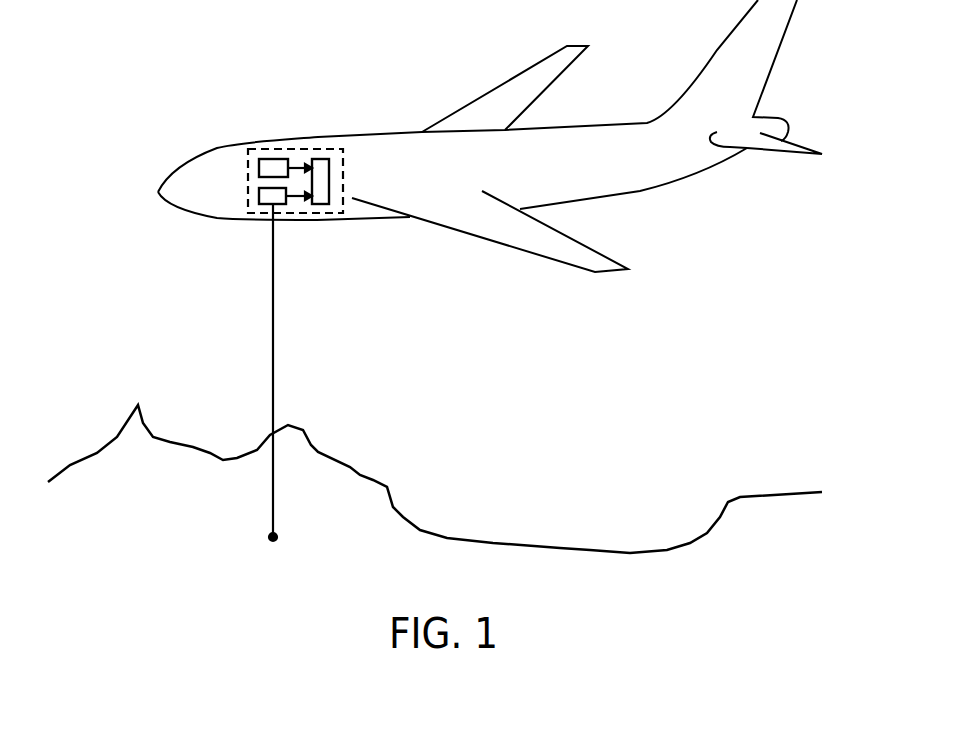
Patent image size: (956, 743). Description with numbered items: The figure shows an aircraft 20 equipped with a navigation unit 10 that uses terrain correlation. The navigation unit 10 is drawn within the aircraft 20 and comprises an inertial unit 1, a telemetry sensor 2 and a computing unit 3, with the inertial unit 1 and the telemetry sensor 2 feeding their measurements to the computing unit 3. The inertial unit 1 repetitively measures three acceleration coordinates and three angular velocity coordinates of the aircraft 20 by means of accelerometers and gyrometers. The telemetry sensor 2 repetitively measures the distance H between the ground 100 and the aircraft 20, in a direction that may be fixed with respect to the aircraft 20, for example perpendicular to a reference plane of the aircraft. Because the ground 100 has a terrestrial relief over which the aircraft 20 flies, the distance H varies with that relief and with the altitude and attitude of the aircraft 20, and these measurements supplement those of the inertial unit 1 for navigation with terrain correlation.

The inertial unit 1 is at (260, 167).
The telemetry sensor 2 is at (259, 197).
The computing unit 3 is at (322, 204).
The navigation unit 10 is at (279, 150).
The aircraft 20 is at (318, 137).
The ground 100 is at (160, 530).
The distance H is at (273, 348).